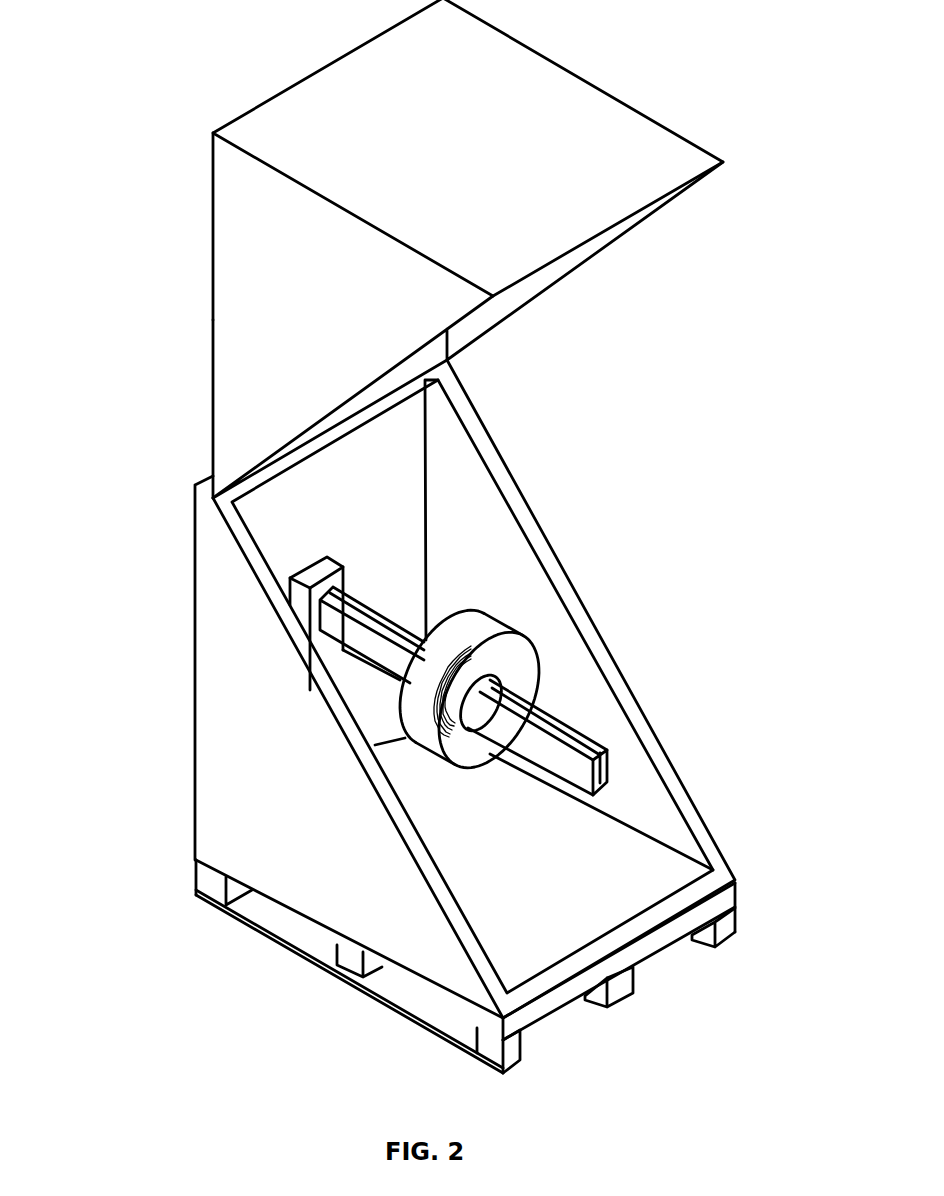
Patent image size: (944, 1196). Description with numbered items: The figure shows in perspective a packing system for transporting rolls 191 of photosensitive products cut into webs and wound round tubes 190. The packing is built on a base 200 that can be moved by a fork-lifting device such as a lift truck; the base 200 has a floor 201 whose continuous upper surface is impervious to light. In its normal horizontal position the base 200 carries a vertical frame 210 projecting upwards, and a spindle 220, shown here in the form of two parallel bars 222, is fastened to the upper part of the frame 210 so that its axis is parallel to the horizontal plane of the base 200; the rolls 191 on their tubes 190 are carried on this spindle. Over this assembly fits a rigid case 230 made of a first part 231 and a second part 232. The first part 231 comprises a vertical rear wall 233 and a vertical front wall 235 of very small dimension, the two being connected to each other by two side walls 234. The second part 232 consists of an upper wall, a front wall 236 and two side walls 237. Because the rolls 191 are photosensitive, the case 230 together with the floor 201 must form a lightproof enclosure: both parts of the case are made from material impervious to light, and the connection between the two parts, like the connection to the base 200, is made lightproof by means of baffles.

The tube 190 is at (467, 729).
The roll 191 is at (493, 654).
The base 200 is at (501, 962).
The floor 201 is at (516, 966).
The frame 210 is at (312, 570).
The spindle 220 is at (604, 723).
The parallel bars 222 is at (612, 763).
The rigid case 230 is at (121, 230).
The first part 231 is at (182, 505).
The second part 232 is at (201, 195).
The rear wall 233 is at (378, 432).
The side walls 234 is at (232, 684).
The front wall 235 is at (638, 950).
The front wall 236 is at (368, 125).
The side walls 237 is at (425, 295).